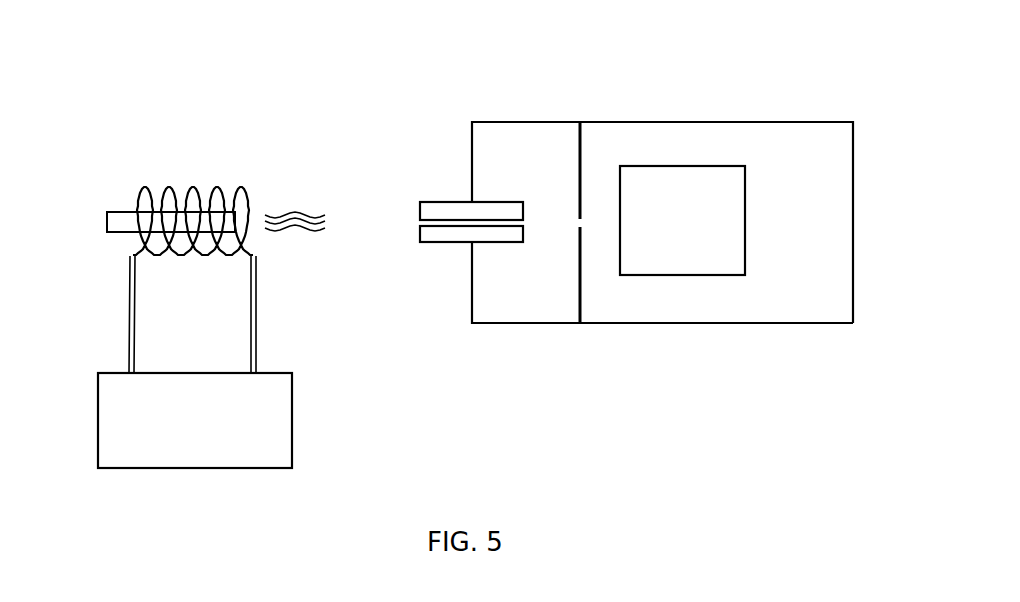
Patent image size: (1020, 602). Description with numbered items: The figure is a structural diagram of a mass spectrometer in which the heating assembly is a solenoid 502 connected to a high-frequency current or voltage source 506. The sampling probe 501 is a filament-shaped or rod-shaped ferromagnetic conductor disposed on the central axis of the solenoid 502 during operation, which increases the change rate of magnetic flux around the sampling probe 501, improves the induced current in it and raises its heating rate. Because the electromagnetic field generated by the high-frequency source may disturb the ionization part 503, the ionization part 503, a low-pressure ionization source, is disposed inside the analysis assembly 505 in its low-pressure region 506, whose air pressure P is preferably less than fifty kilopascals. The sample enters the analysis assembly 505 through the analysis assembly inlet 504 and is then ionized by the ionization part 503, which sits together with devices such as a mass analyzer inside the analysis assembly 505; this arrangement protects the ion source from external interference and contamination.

The sampling probe 501 is at (120, 212).
The solenoid 502 is at (243, 188).
The ionization part 503 is at (683, 170).
The analysis assembly inlet 504 is at (419, 230).
The analysis assembly 505 is at (818, 105).
The high-frequency current or voltage source 506 is at (277, 415).